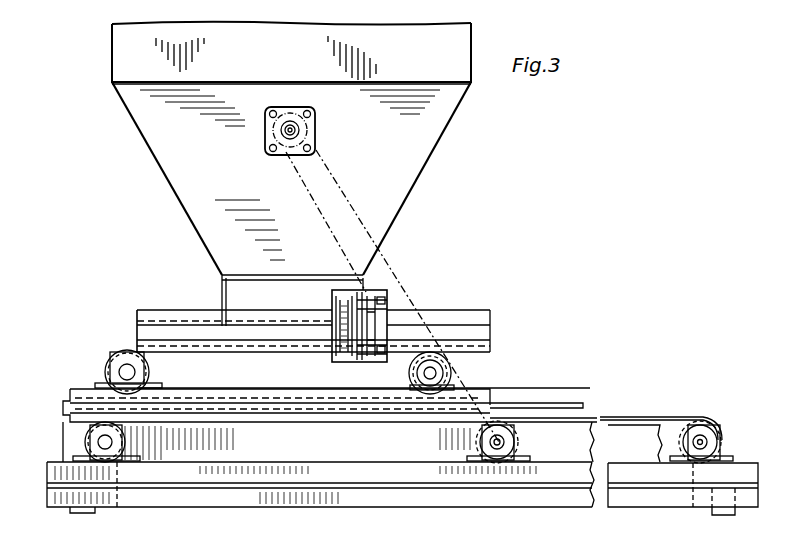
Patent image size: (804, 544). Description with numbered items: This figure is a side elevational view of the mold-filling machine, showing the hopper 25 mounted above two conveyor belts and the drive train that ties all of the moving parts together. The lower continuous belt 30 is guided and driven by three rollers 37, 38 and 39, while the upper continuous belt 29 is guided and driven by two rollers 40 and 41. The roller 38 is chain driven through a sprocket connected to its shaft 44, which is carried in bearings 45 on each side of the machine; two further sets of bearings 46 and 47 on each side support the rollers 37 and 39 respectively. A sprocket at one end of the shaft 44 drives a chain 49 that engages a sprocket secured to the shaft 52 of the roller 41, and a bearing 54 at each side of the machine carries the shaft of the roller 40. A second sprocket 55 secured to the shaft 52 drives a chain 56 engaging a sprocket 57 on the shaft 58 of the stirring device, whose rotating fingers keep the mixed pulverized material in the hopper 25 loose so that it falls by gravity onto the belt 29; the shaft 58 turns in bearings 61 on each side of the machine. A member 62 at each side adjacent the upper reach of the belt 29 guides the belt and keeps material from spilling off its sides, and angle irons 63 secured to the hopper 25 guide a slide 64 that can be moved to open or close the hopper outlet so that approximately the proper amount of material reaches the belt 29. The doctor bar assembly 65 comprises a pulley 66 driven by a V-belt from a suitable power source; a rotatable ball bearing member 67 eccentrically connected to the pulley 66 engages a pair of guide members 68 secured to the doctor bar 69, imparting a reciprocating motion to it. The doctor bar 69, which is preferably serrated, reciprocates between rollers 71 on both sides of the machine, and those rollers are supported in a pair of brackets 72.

The hopper 25 is at (447, 127).
The upper continuous belt 29 is at (118, 352).
The lower continuous belt 30 is at (676, 404).
The roller 37 is at (88, 442).
The roller 38 is at (512, 440).
The roller 39 is at (710, 430).
The roller 40 is at (110, 366).
The roller 41 is at (452, 373).
The shaft 44 is at (508, 455).
The bearings 45 is at (504, 426).
The bearings 46 is at (118, 450).
The bearings 47 is at (712, 443).
The chain 49 is at (470, 424).
The shaft 52 is at (444, 366).
The bearing 54 is at (142, 378).
The second sprocket 55 is at (440, 358).
The chain 56 is at (392, 262).
The sprocket 57 is at (312, 140).
The shaft 58 is at (296, 130).
The bearings 61 is at (266, 132).
The member 62 is at (137, 326).
The angle irons 63 is at (150, 310).
The slide 64 is at (203, 314).
The doctor bar assembly 65 is at (324, 299).
The pulley 66 is at (332, 340).
The rotatable ball bearing member 67 is at (343, 360).
The guide members 68 is at (372, 290).
The doctor bar 69 is at (374, 318).
The rollers 71 is at (380, 312).
The brackets 72 is at (378, 296).